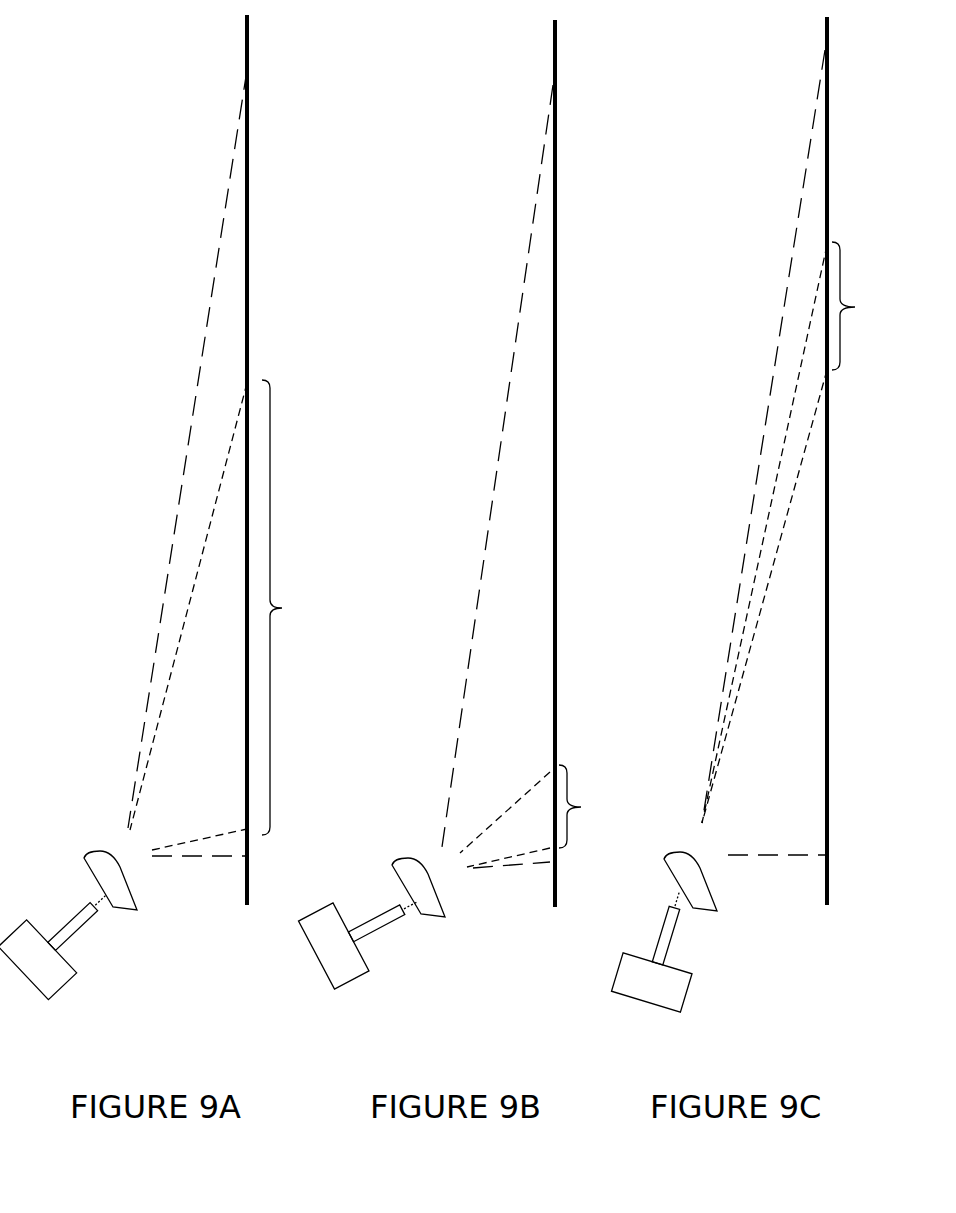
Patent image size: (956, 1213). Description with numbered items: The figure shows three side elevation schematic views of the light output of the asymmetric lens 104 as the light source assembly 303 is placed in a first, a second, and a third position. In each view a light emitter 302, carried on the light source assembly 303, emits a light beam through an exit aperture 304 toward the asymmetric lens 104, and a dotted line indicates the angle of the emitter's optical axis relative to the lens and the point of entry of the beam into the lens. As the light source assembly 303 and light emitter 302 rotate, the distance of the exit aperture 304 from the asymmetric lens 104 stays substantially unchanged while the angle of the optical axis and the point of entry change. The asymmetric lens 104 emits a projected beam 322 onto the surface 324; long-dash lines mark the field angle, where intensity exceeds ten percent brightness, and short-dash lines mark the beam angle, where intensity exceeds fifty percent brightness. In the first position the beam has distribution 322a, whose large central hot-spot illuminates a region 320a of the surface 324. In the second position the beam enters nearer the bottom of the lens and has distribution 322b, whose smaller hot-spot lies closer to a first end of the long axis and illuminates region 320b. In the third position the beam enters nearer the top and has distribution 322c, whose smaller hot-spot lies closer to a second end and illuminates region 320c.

In FIG. 9A, the asymmetric lens 104 is at (133, 908).
In FIG. 9B, the asymmetric lens 104 is at (443, 913).
In FIG. 9C, the asymmetric lens 104 is at (720, 913).
In FIG. 9A, the light emitter 302 is at (78, 920).
In FIG. 9B, the light emitter 302 is at (378, 920).
In FIG. 9C, the light emitter 302 is at (670, 927).
In FIG. 9A, the light source assembly 303 is at (63, 973).
In FIG. 9B, the light source assembly 303 is at (352, 968).
In FIG. 9C, the light source assembly 303 is at (673, 988).
In FIG. 9A, the exit aperture 304 is at (93, 900).
In FIG. 9B, the exit aperture 304 is at (400, 897).
In FIG. 9C, the exit aperture 304 is at (668, 900).
In FIG. 9A, the region 320a is at (303, 607).
In FIG. 9B, the region 320b is at (597, 806).
In FIG. 9C, the region 320c is at (872, 306).
In FIG. 9A, the projected beam 322 is at (152, 540).
In FIG. 9B, the projected beam 322 is at (459, 540).
In FIG. 9C, the projected beam 322 is at (732, 540).
In FIG. 9A, the light distribution 322a is at (234, 702).
In FIG. 9B, the light distribution 322b is at (546, 840).
In FIG. 9C, the light distribution 322c is at (802, 402).
In FIG. 9A, the surface 324 is at (247, 42).
In FIG. 9B, the surface 324 is at (555, 45).
In FIG. 9C, the surface 324 is at (827, 42).